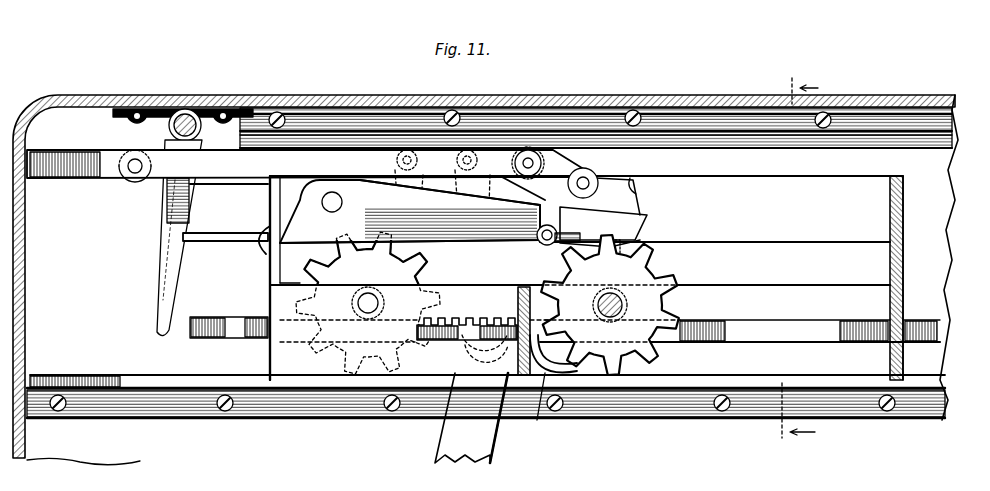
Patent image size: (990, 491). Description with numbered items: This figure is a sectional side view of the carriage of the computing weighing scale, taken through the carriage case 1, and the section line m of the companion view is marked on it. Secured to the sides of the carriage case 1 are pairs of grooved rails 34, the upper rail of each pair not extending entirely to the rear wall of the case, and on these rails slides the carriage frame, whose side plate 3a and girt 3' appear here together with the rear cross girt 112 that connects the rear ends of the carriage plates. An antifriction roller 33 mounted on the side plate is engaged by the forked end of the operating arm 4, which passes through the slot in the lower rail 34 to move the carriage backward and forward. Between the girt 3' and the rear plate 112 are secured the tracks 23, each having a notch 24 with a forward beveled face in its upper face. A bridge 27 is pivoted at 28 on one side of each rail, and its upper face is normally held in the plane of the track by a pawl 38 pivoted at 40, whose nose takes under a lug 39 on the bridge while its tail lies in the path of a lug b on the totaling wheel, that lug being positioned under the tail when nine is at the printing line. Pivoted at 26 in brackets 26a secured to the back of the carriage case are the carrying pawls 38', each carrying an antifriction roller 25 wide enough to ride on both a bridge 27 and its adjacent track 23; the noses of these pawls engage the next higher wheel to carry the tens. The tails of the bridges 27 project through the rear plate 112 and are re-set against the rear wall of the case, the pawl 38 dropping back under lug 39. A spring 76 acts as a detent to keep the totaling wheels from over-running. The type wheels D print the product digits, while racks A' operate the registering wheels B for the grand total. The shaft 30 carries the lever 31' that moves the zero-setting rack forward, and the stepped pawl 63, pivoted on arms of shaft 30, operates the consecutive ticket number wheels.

The carriage case 1 is at (28, 342).
The side plate 3a is at (899, 268).
The girt 3' is at (879, 278).
The operating arm 4 is at (471, 418).
The track 23 is at (605, 278).
The notch 24 is at (619, 188).
The antifriction roller 25 is at (597, 174).
The pivot 26 is at (135, 174).
The bracket 26a is at (100, 178).
The bridge 27 is at (463, 211).
The bridge pivot 28 is at (410, 211).
The shaft 30 is at (190, 110).
The lever 31' is at (182, 238).
The antifriction roller 33 is at (462, 338).
The grooved rail 34 is at (292, 110).
The pawl 38 is at (556, 252).
The carrying pawl 38' is at (308, 193).
The lug 39 is at (537, 234).
The pawl pivot 40 is at (541, 241).
The pawl 63 is at (236, 238).
The spring 76 is at (539, 400).
The cross girt 112 is at (270, 208).
The rack A' is at (229, 315).
The registering wheel B is at (675, 282).
The type wheel D is at (433, 278).
The lug b is at (636, 244).
The section line m is at (797, 260).